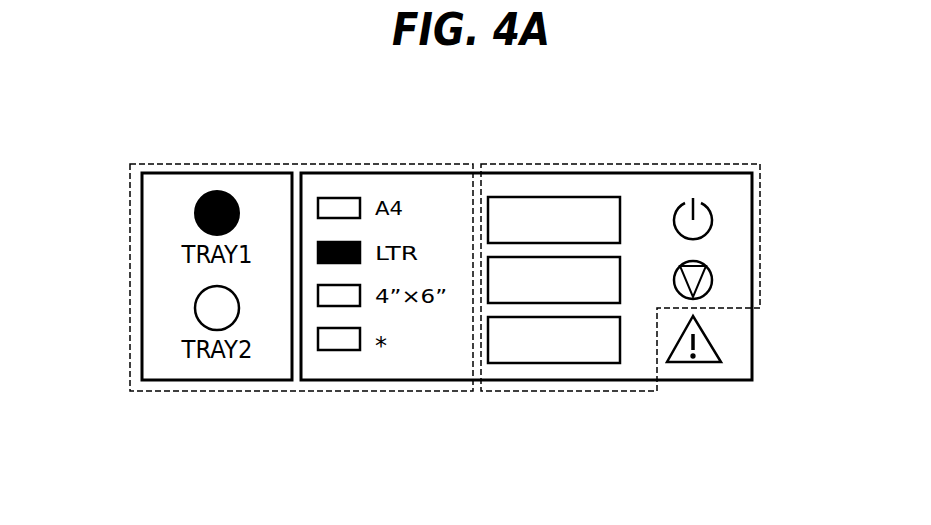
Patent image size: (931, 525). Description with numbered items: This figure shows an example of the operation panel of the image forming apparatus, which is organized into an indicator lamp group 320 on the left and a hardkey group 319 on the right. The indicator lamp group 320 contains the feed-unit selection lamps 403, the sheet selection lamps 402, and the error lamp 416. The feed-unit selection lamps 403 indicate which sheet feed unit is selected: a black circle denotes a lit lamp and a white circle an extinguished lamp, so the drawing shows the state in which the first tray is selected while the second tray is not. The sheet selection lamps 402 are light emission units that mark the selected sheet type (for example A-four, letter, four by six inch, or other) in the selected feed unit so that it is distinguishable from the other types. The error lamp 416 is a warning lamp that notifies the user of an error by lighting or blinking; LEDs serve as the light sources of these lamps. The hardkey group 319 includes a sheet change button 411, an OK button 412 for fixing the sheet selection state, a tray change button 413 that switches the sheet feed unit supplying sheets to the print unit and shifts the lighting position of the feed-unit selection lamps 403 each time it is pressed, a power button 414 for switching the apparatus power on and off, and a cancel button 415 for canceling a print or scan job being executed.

The hardkey group 319 is at (617, 164).
The indicator lamp group 320 is at (130, 223).
The sheet selection lamps 402 is at (337, 350).
The feed-unit selection lamps 403 is at (216, 191).
The sheet change button 411 is at (517, 197).
The OK button 412 is at (620, 288).
The tray change button 413 is at (520, 363).
The power button 414 is at (715, 213).
The cancel button 415 is at (715, 275).
The error lamp 416 is at (712, 342).